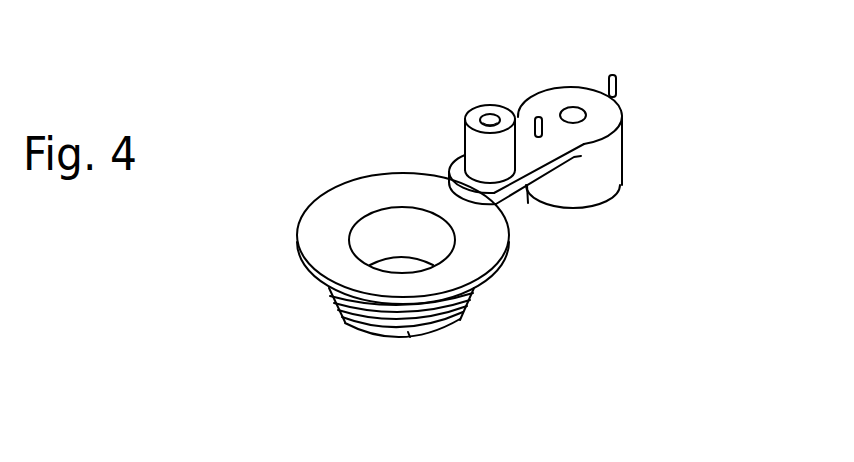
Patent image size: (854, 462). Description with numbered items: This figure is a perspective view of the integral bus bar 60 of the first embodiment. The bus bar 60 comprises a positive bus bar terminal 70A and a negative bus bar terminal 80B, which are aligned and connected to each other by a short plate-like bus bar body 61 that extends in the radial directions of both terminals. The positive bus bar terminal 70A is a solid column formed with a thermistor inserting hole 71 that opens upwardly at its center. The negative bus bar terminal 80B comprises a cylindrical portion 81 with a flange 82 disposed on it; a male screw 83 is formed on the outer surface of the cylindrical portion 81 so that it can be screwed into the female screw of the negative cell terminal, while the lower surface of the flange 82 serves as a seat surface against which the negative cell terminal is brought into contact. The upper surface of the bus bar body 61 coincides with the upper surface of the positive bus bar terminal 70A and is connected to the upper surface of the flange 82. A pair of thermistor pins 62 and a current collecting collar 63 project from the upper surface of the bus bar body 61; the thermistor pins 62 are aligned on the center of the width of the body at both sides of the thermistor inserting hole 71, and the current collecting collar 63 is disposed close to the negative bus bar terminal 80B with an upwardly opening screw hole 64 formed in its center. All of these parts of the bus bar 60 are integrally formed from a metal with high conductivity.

The bus bar 60 is at (406, 267).
The bus bar body 61 is at (516, 169).
The thermistor pins 62 is at (538, 116).
The current collecting collar 63 is at (436, 115).
The screw hole 64 is at (488, 118).
The positive bus bar terminal 70A is at (631, 115).
The thermistor inserting hole 71 is at (573, 108).
The negative bus bar terminal 80B is at (382, 366).
The cylindrical portion 81 is at (458, 320).
The flange 82 is at (511, 242).
The male screw 83 is at (408, 333).